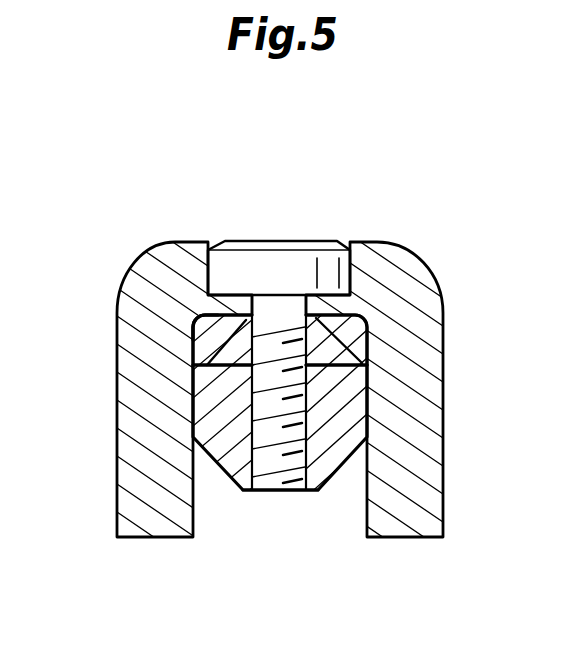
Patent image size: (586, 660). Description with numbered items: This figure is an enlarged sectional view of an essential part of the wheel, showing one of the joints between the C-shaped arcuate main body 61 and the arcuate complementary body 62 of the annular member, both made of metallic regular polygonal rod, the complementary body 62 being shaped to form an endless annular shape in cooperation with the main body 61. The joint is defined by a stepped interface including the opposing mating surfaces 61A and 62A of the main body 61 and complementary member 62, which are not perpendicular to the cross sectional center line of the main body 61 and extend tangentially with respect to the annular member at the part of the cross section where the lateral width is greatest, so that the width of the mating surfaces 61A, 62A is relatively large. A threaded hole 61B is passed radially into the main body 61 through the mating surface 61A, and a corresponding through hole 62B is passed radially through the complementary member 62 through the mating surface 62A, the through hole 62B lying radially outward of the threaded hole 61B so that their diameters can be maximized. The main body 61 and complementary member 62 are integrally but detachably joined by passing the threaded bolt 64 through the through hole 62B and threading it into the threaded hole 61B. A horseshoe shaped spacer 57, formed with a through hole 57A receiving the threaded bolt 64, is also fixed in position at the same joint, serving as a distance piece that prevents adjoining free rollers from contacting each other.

The spacer 57 is at (420, 467).
The through hole 57A is at (296, 322).
The main body 61 is at (224, 447).
The mating surface 61A is at (214, 366).
The threaded hole 61B is at (288, 490).
The complementary body 62 is at (330, 340).
The mating surface 62A is at (340, 367).
The through hole 62B is at (252, 352).
The threaded bolt 64 is at (248, 262).